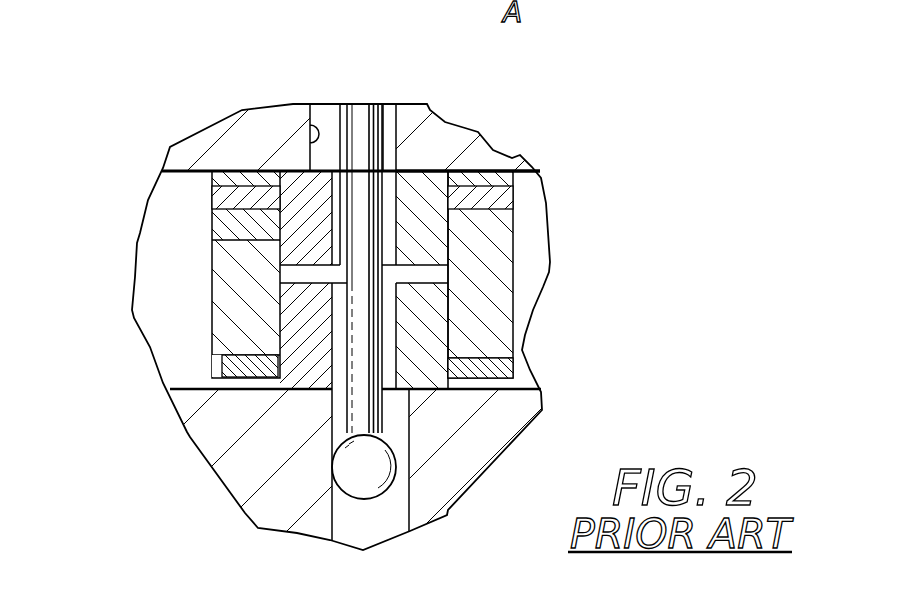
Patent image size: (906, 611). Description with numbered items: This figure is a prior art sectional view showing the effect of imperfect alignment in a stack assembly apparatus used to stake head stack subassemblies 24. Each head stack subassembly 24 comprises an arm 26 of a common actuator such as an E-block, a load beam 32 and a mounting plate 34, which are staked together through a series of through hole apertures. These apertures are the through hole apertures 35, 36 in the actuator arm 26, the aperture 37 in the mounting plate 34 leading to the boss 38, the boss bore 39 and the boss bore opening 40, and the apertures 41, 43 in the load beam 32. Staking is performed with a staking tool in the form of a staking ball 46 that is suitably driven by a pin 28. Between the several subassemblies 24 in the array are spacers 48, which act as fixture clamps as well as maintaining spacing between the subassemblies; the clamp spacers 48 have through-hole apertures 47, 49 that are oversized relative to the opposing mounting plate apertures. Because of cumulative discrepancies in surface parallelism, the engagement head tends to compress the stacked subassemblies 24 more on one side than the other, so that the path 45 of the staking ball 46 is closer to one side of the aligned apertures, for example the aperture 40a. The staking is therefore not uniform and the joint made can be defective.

The head stack subassembly 24 is at (530, 228).
The arm 26 is at (230, 262).
The pin 28 is at (360, 113).
The load beam 32 is at (210, 368).
The mounting plate 34 is at (163, 168).
The through hole aperture 35 is at (440, 157).
The through hole aperture 36 is at (450, 310).
The through hole aperture 37 is at (340, 150).
The boss 38 is at (405, 299).
The boss bore 39 is at (410, 277).
The boss bore opening 40 is at (393, 237).
The aligned aperture 40a is at (329, 259).
The aperture 41 is at (228, 177).
The aperture 43 is at (272, 205).
The path 45 is at (330, 375).
The staking ball 46 is at (345, 470).
The through-hole aperture 47 is at (414, 397).
The spacer 48 is at (447, 148).
The through-hole aperture 49 is at (283, 172).